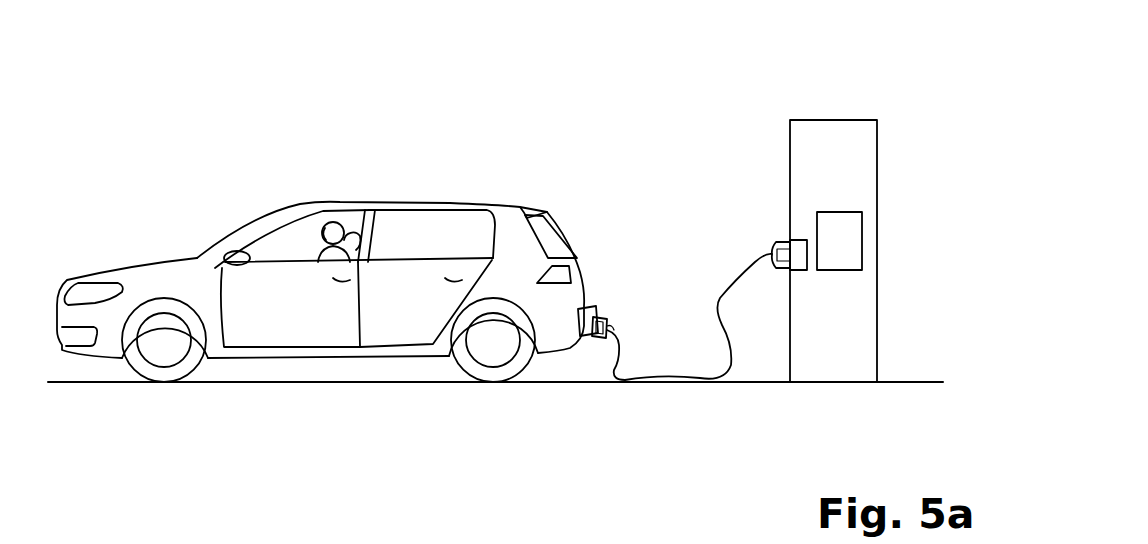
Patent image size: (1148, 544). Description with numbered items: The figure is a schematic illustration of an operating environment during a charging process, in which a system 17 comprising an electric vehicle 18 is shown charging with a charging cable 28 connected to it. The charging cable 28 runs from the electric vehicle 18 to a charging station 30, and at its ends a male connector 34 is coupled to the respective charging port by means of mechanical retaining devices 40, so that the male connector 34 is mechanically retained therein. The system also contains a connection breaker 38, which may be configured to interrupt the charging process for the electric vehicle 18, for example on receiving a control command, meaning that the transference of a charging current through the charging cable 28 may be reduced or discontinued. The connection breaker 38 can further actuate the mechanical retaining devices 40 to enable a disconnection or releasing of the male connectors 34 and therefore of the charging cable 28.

The system 17 is at (627, 156).
The electric vehicle 18 is at (493, 204).
The charging cable 28 is at (683, 383).
The charging station 30 is at (833, 120).
The male connector 34 is at (594, 338).
The connection breaker 38 is at (590, 306).
The mechanical retaining devices 40 is at (612, 316).